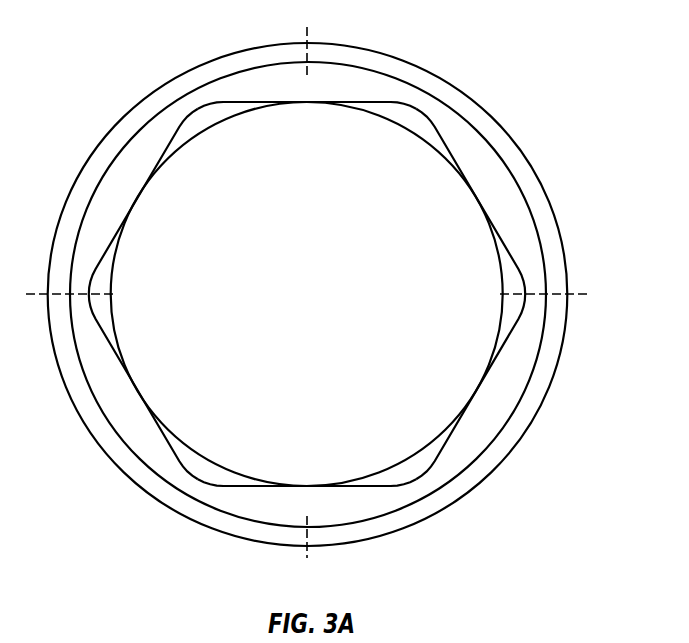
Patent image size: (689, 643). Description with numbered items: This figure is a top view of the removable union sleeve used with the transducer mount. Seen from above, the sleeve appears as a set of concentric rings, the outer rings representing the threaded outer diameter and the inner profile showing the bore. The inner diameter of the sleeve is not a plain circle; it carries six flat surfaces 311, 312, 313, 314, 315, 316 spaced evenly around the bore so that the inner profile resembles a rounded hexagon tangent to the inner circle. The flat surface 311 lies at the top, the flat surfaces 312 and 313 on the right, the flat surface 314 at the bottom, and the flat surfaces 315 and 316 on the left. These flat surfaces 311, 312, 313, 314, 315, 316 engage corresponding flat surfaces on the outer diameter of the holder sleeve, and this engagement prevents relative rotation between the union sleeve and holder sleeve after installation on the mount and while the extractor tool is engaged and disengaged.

The flat surface 311 is at (310, 102).
The flat surface 312 is at (477, 192).
The flat surface 313 is at (478, 397).
The flat surface 314 is at (310, 487).
The flat surface 315 is at (137, 398).
The flat surface 316 is at (137, 193).